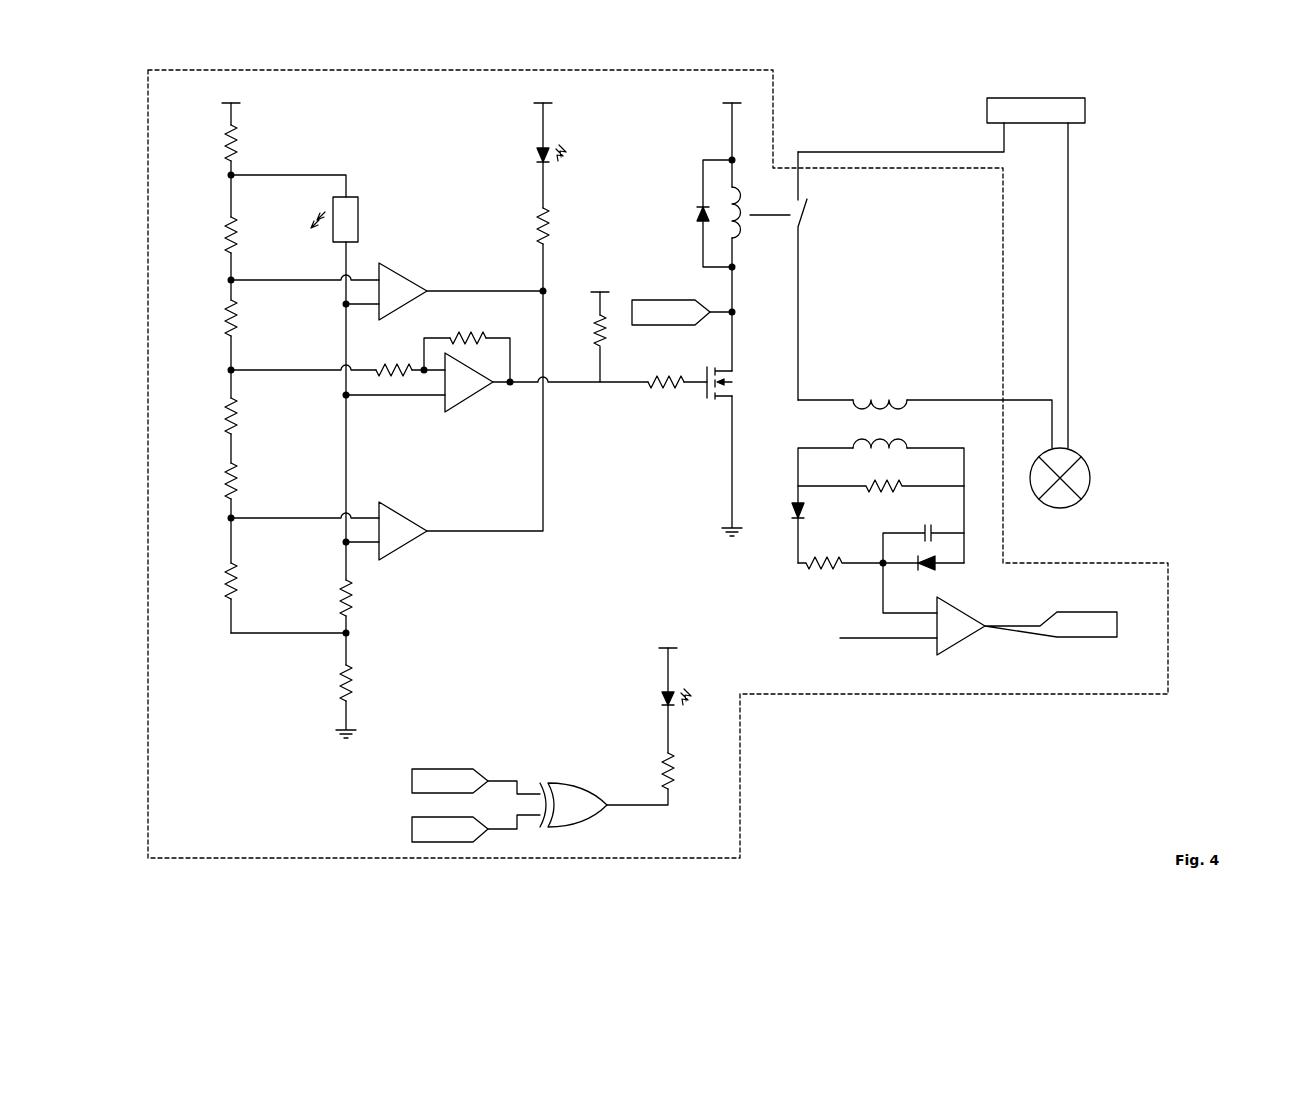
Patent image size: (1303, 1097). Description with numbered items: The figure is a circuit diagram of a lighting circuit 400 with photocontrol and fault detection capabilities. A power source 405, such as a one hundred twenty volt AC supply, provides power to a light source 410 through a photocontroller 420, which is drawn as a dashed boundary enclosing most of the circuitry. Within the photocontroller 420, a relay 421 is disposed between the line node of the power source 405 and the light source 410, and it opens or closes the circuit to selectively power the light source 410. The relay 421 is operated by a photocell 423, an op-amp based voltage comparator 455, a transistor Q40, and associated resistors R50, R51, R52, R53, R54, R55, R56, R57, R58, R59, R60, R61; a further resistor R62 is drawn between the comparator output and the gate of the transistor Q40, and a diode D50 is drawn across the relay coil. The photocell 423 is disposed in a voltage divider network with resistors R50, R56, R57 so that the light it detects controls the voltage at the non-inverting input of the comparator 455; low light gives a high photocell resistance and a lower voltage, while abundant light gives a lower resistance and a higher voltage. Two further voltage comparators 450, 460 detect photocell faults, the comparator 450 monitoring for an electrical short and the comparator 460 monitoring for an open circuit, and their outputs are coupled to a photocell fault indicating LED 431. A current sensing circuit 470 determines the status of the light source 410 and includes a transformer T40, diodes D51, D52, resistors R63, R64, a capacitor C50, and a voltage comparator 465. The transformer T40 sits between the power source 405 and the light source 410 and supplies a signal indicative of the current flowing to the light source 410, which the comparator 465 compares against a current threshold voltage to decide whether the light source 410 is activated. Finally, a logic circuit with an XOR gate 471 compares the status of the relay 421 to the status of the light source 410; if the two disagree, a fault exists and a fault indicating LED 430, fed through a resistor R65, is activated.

The lighting circuit 400 is at (1233, 48).
The power source 405 is at (1036, 101).
The light source 410 is at (1060, 487).
The photocontroller 420 is at (658, 453).
The relay 421 is at (793, 276).
The photocell 423 is at (352, 219).
The fault indicating LED 430 is at (663, 698).
The photocell fault indicating LED 431 is at (537, 155).
The voltage comparator 450 is at (408, 287).
The op-amp based voltage comparator 455 is at (474, 385).
The voltage comparator 460 is at (411, 527).
The voltage comparator 465 is at (966, 623).
The current sensing circuit 470 is at (745, 588).
The XOR gate 471 is at (573, 794).
The resistor R50 is at (212, 143).
The resistor R51 is at (212, 235).
The resistor R52 is at (212, 318).
The resistor R53 is at (212, 416).
The resistor R54 is at (212, 481).
The resistor R55 is at (212, 581).
The resistor R56 is at (329, 598).
The resistor R57 is at (329, 683).
The resistor R58 is at (394, 362).
The resistor R59 is at (468, 330).
The resistor R60 is at (524, 226).
The resistor R61 is at (583, 330).
The gate resistor R62 is at (666, 374).
The resistor R63 is at (881, 477).
The resistor R64 is at (840, 554).
The resistor R65 is at (650, 771).
The flyback diode D50 is at (697, 213).
The diode D51 is at (816, 511).
The diode D52 is at (923, 573).
The capacitor C50 is at (923, 535).
The transistor Q40 is at (739, 383).
The transformer T40 is at (899, 424).